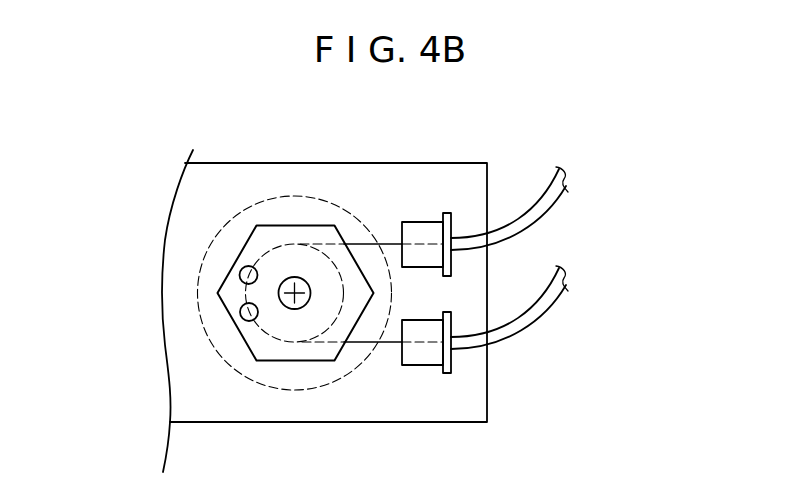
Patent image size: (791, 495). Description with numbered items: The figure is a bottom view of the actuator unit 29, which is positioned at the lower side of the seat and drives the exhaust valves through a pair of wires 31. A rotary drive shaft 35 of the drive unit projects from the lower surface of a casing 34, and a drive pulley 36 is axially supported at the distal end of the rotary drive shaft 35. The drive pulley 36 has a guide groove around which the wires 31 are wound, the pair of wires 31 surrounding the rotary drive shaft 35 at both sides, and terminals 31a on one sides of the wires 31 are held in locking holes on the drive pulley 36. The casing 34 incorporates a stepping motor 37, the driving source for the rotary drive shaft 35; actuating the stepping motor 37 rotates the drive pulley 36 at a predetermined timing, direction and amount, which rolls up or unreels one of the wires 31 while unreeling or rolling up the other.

The actuator unit 29 is at (505, 418).
The wires 31 is at (528, 207).
The terminals 31a is at (240, 276).
The casing 34 is at (360, 163).
The rotary drive shaft 35 is at (294, 296).
The drive pulley 36 is at (322, 361).
The stepping motor 37 is at (207, 252).